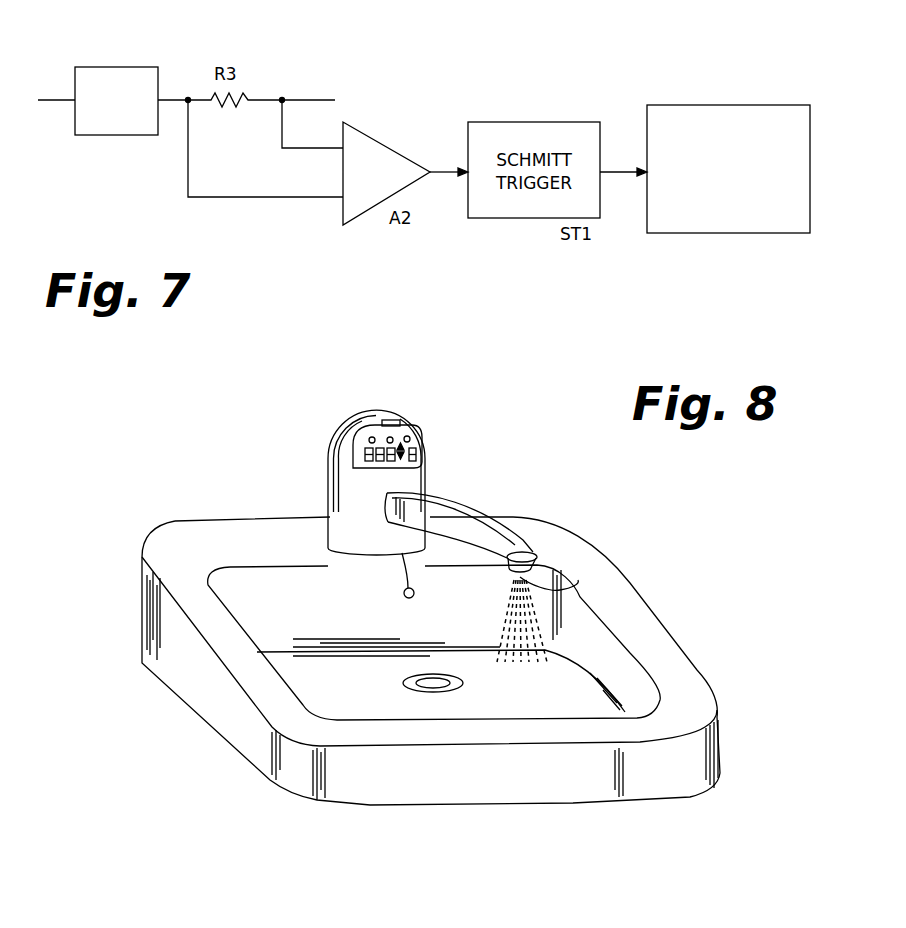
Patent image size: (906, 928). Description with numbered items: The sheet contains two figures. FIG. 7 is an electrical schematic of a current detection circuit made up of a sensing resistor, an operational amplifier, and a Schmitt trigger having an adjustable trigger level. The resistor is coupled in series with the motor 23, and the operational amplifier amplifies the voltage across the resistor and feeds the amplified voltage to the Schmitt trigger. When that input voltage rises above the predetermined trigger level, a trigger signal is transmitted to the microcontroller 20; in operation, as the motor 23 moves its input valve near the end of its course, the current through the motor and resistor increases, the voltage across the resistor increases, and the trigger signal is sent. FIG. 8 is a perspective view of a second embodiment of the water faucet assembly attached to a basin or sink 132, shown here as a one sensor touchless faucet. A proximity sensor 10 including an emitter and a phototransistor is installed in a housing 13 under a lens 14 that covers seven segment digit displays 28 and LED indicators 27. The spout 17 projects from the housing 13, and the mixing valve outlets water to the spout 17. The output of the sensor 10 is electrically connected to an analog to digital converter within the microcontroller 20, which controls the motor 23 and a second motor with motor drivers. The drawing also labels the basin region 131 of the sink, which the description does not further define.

In FIG. 8, the proximity sensor 10 is at (397, 491).
In FIG. 8, the housing 13 is at (366, 419).
In FIG. 8, the lens 14 is at (363, 442).
In FIG. 8, the spout 17 is at (510, 522).
In FIG. 7, the microcontroller 20 is at (780, 233).
In FIG. 7, the motor 23 is at (128, 67).
In FIG. 8, the LED indicators 27 is at (398, 466).
In FIG. 8, the seven segment digit displays 28 is at (414, 456).
In FIG. 8, the wash basin 131 is at (573, 590).
In FIG. 8, the sink 132 is at (665, 627).